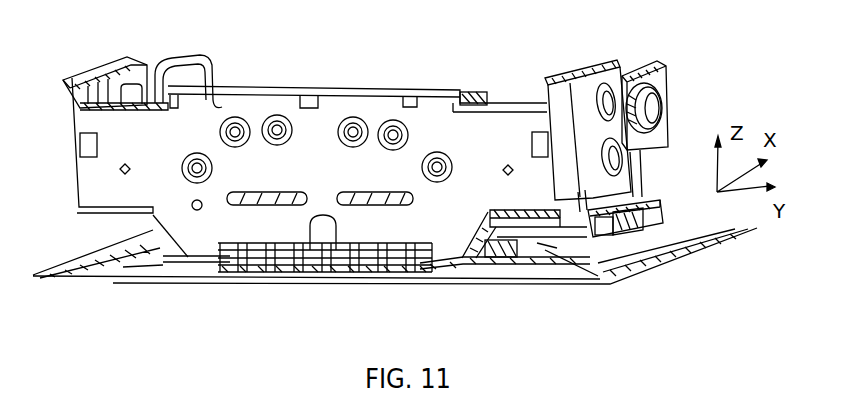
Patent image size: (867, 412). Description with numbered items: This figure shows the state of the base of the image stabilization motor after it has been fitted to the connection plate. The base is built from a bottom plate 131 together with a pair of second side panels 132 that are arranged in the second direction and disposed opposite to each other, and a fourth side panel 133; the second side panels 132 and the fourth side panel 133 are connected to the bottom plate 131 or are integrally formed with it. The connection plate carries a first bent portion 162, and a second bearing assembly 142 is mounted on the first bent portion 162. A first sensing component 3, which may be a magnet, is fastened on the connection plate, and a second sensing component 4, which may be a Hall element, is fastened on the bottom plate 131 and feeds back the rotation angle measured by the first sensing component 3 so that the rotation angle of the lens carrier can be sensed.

The second side panel 132 is at (88, 68).
The fourth side panel 133 is at (510, 118).
The first bent portion 162 is at (658, 76).
The second bearing assembly 142 is at (657, 108).
The bottom plate 131 is at (502, 280).
The first sensing component 3 is at (636, 214).
The second sensing component 4 is at (530, 237).